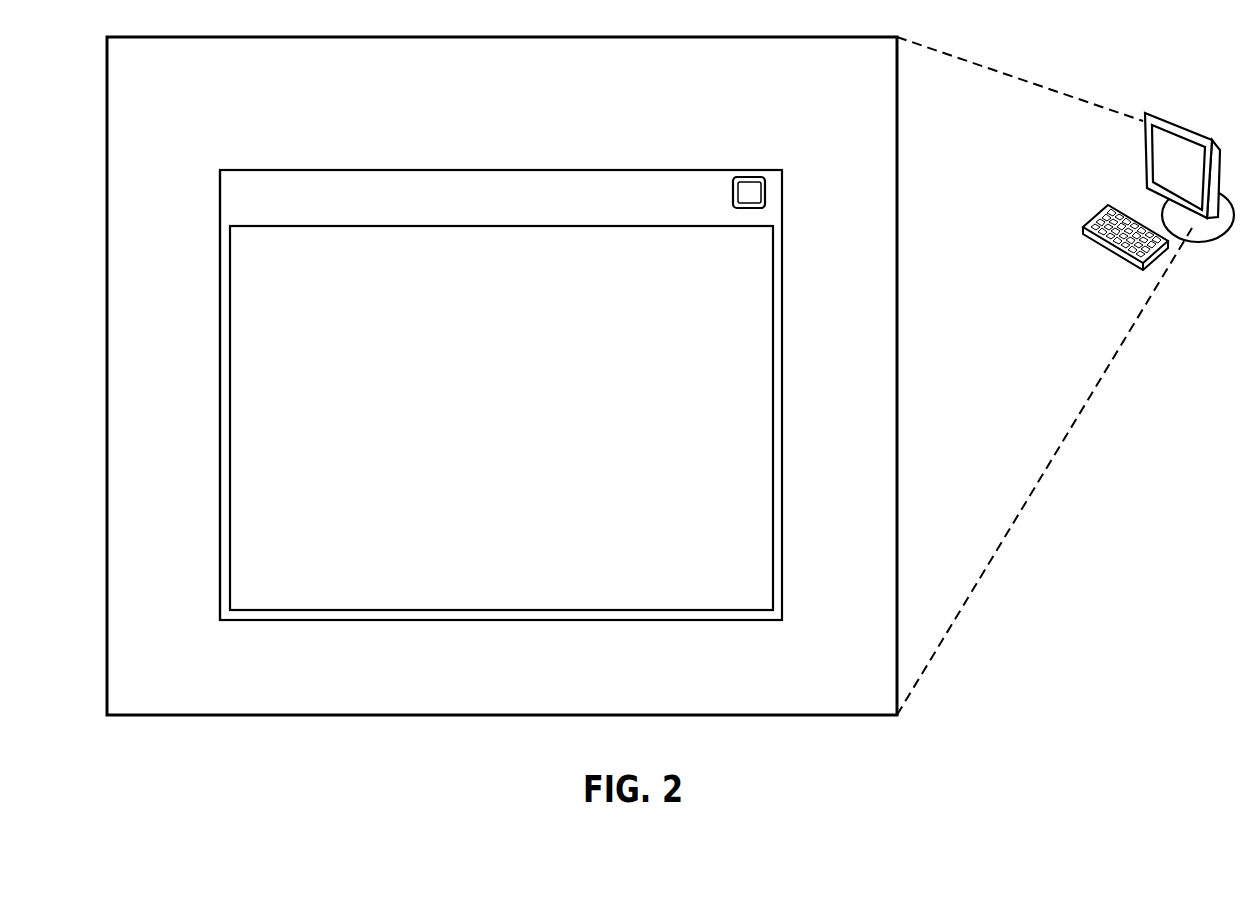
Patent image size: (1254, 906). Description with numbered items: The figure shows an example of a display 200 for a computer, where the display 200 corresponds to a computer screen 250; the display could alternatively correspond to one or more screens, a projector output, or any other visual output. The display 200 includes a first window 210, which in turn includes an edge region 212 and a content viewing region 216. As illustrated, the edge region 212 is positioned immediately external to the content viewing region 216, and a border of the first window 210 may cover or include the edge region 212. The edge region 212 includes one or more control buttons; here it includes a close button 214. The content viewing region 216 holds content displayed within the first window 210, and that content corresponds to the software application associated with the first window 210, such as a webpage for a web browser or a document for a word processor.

The display 200 is at (555, 74).
The first window 210 is at (582, 204).
The edge region 212 is at (220, 358).
The close button 214 is at (808, 162).
The content viewing region 216 is at (630, 262).
The computer screen 250 is at (1188, 125).